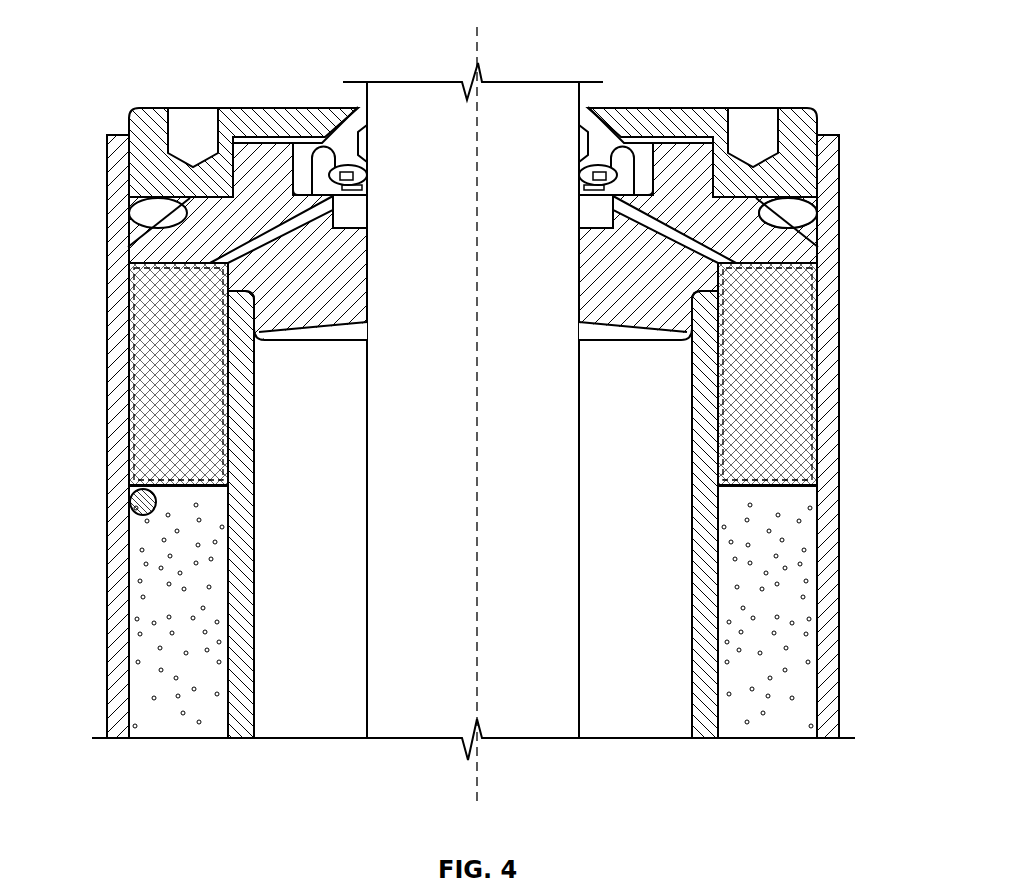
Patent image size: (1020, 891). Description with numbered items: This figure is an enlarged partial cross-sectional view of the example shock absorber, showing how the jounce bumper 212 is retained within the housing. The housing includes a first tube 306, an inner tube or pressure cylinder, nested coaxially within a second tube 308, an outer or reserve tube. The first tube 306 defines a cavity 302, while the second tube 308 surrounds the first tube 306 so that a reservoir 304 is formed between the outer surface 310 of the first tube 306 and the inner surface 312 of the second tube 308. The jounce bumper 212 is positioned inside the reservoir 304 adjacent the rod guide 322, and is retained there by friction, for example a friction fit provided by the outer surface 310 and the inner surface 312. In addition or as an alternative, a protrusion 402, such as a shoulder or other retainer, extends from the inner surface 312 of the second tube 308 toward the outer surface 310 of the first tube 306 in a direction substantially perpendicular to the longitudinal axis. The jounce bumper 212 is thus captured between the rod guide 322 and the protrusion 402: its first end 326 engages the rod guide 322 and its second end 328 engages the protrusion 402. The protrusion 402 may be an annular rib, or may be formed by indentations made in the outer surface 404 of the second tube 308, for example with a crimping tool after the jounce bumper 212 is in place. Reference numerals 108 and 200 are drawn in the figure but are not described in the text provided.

The shaft 108 is at (477, 700).
The annular seal body 200 is at (158, 392).
The jounce bumper 212 is at (158, 330).
The cavity 302 is at (307, 695).
The reservoir 304 is at (158, 668).
The first tube 306 is at (718, 670).
The second tube 308 is at (108, 723).
The outer surface of the first tube 310 is at (707, 610).
The inner surface of the second tube 312 is at (816, 566).
The rod guide 322 is at (775, 244).
The first end of the jounce bumper 326 is at (155, 265).
The second end of the jounce bumper 328 is at (168, 482).
The protrusion 402 is at (138, 500).
The outer surface of the second tube 404 is at (108, 567).